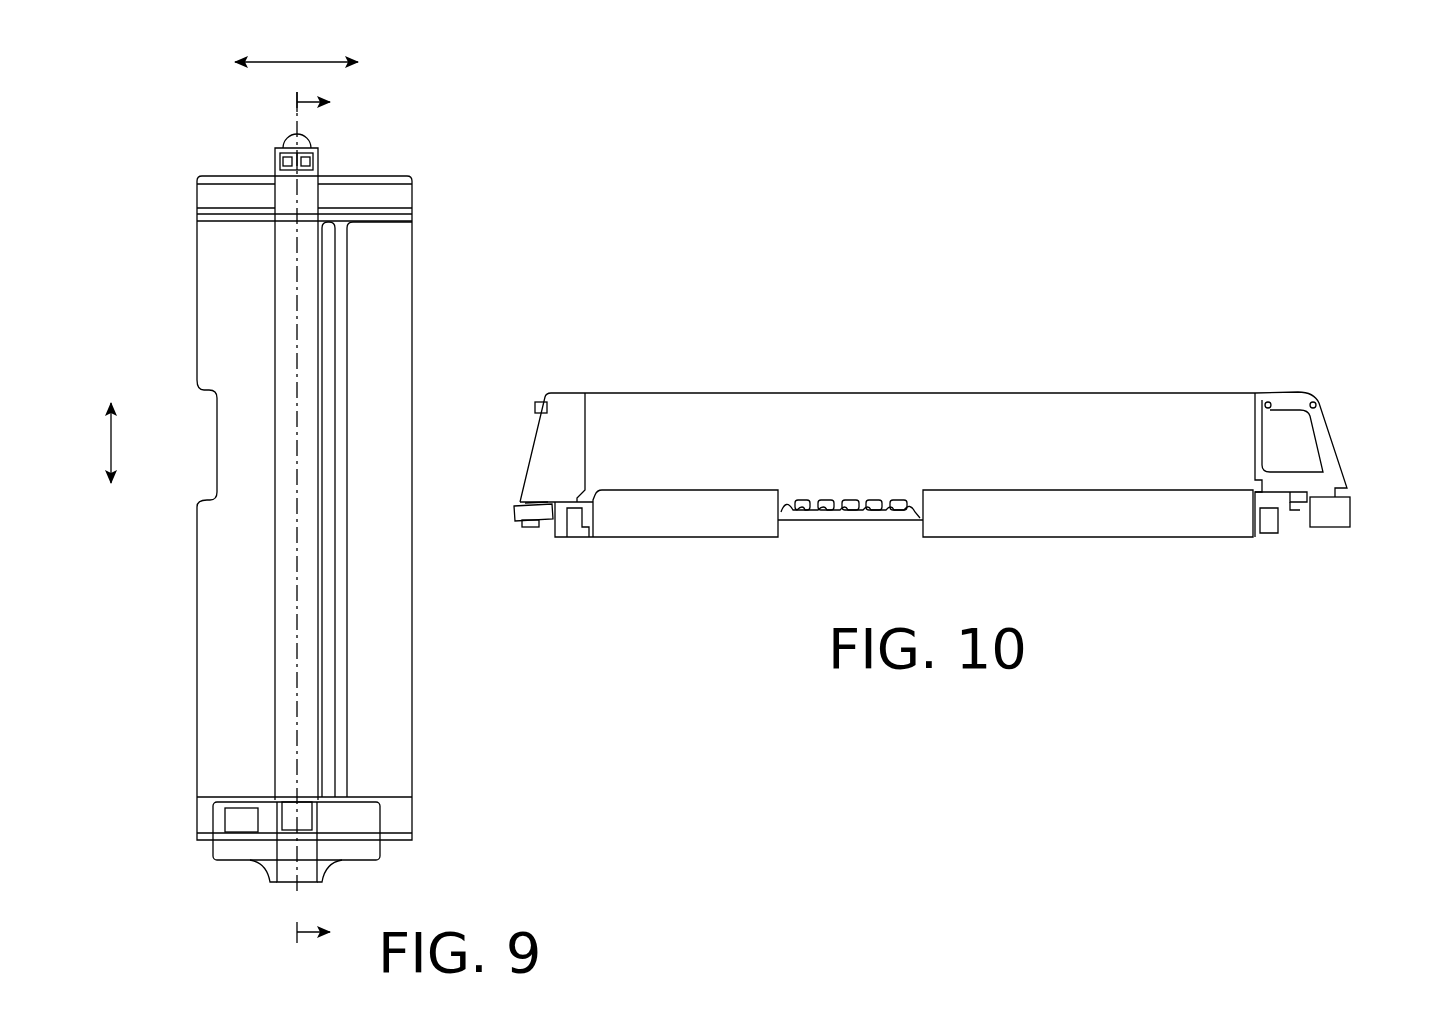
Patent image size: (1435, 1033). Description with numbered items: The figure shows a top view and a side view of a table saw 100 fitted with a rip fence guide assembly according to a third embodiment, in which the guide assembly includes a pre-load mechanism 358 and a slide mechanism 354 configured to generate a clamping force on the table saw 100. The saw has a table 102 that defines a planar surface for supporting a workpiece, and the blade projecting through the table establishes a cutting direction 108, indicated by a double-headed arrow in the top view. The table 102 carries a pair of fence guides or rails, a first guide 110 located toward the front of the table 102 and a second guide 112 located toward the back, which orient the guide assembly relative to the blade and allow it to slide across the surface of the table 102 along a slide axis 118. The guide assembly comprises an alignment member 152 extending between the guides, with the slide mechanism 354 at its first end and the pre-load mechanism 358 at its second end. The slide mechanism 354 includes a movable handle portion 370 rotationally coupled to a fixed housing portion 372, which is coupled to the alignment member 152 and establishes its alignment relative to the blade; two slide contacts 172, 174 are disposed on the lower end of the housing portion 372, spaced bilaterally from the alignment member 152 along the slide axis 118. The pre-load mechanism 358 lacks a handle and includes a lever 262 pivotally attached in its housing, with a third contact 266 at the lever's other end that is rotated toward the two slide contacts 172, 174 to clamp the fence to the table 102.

In FIG. 9, the table saw 100 is at (137, 150).
In FIG. 10, the table saw 100 is at (1277, 262).
In FIG. 9, the table 102 is at (197, 278).
In FIG. 10, the table 102 is at (690, 540).
In FIG. 9, the cutting direction 108 is at (108, 428).
In FIG. 9, the first guide 110 is at (412, 825).
In FIG. 10, the first guide 110 is at (1272, 540).
In FIG. 9, the second guide 112 is at (412, 195).
In FIG. 10, the second guide 112 is at (577, 540).
In FIG. 9, the slide axis 118 is at (290, 62).
In FIG. 9, the alignment member 152 is at (272, 615).
In FIG. 10, the alignment member 152 is at (690, 393).
In FIG. 9, the slide contact 172 is at (207, 850).
In FIG. 10, the slide contact 172 is at (1300, 505).
In FIG. 9, the slide contact 174 is at (380, 850).
In FIG. 10, the lever 262 is at (528, 453).
In FIG. 10, the third contact 266 is at (515, 522).
In FIG. 10, the slide mechanism 354 is at (1327, 378).
In FIG. 9, the pre-load mechanism 358 is at (340, 148).
In FIG. 10, the pre-load mechanism 358 is at (527, 388).
In FIG. 10, the movable handle portion 370 is at (1345, 437).
In FIG. 10, the housing portion 372 is at (1260, 393).